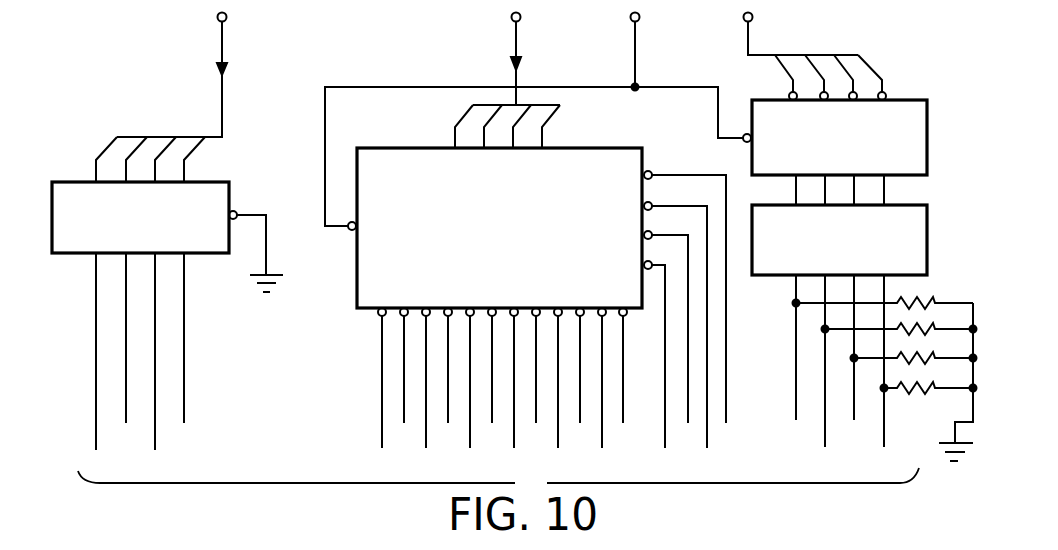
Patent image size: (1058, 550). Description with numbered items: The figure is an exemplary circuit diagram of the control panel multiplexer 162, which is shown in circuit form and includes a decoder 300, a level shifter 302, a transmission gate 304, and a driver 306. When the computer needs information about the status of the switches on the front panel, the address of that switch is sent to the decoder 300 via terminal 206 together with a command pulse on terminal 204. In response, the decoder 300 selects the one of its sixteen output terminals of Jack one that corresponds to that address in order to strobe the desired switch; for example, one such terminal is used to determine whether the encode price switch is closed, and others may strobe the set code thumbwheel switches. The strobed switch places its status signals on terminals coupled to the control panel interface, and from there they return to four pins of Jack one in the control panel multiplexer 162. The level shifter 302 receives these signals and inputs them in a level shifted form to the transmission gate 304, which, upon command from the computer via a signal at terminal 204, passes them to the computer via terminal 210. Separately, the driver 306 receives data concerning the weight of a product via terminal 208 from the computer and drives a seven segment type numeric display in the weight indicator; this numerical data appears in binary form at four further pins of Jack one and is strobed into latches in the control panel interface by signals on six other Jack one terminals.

The control panel multiplexer 162 is at (487, 63).
The decoder 300 is at (414, 148).
The level shifter 302 is at (782, 280).
The transmission gate 304 is at (779, 101).
The driver 306 is at (230, 190).
The terminal 204 is at (638, 21).
The terminal 206 is at (520, 22).
The terminal 208 is at (218, 21).
The terminal 210 is at (751, 21).